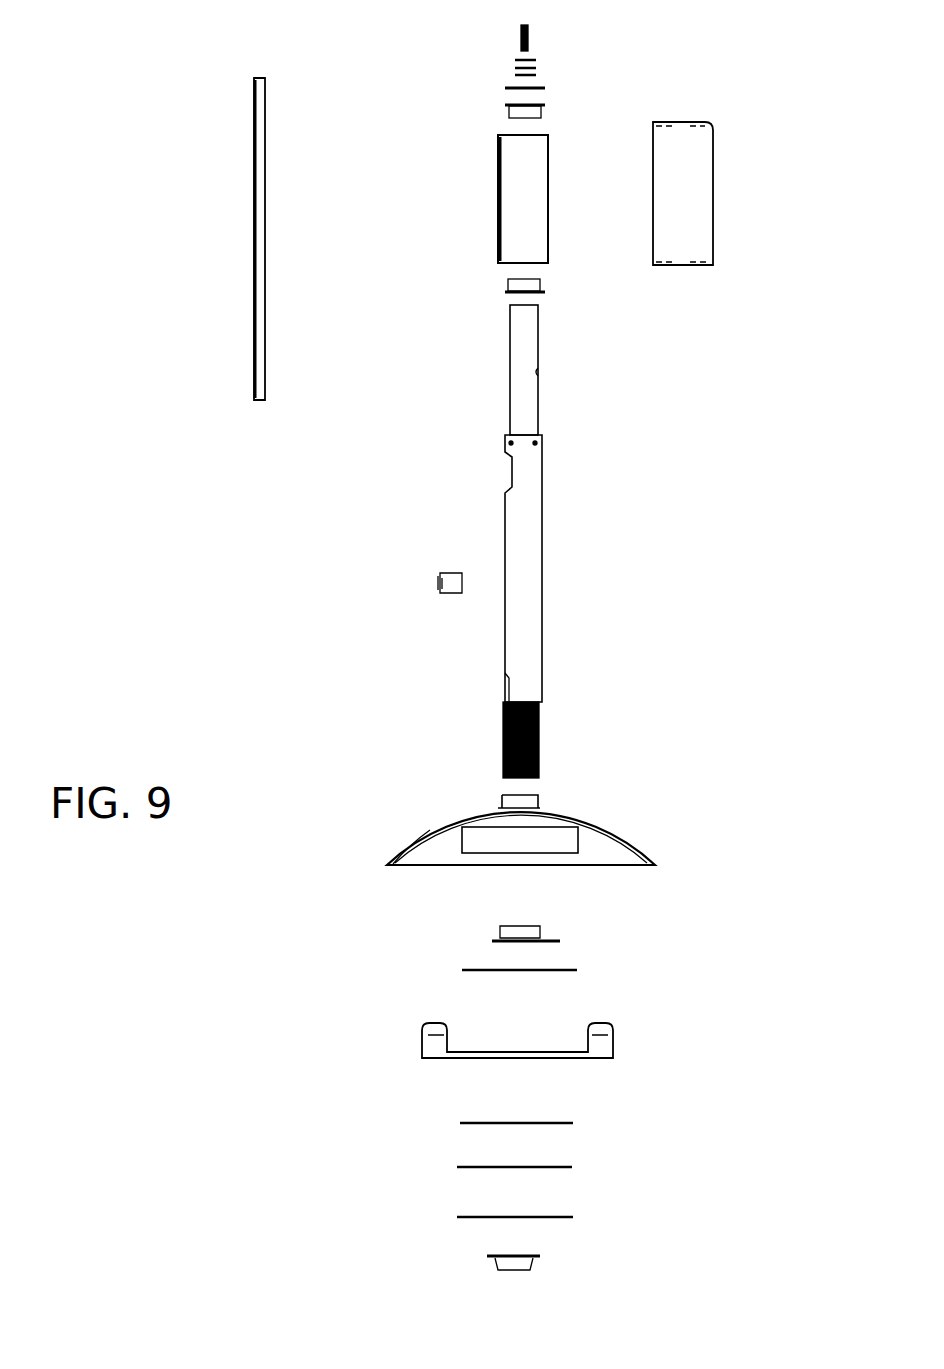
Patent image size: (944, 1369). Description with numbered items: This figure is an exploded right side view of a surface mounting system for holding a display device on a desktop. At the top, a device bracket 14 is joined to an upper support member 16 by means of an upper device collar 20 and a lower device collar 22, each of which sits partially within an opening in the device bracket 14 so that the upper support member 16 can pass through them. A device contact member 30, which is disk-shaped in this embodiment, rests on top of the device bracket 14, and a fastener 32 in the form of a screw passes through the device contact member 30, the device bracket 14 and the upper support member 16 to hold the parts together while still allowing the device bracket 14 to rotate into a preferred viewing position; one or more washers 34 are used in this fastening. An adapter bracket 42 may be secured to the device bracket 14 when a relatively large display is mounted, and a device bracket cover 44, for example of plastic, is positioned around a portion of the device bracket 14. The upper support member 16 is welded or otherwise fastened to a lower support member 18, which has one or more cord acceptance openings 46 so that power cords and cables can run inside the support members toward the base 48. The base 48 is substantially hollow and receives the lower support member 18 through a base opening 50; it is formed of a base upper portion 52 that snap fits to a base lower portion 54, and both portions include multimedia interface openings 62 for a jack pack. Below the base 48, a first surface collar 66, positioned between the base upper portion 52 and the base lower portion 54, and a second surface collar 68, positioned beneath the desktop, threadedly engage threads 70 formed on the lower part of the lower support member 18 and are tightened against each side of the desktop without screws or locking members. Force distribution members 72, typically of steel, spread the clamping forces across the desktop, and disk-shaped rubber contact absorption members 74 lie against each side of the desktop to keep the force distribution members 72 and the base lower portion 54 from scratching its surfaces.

The device bracket 14 is at (498, 200).
The upper support member 16 is at (538, 343).
The lower support member 18 is at (542, 527).
The upper device collar 20 is at (540, 107).
The lower device collar 22 is at (540, 289).
The device contact member 30 is at (505, 88).
The fastener 32 is at (520, 25).
The washers 34 is at (535, 72).
The adapter bracket 42 is at (253, 112).
The device bracket cover 44 is at (707, 183).
The cord acceptance openings 46 is at (507, 482).
The base 48 is at (633, 835).
The base opening 50 is at (538, 795).
The base upper portion 52 is at (393, 848).
The base lower portion 54 is at (422, 1028).
The multimedia interface openings 62 is at (552, 845).
The first surface collar 66 is at (560, 942).
The second surface collar 68 is at (540, 1255).
The threads 70 is at (538, 712).
The force distribution members 72 is at (467, 968).
The contact absorption members 74 is at (460, 1123).